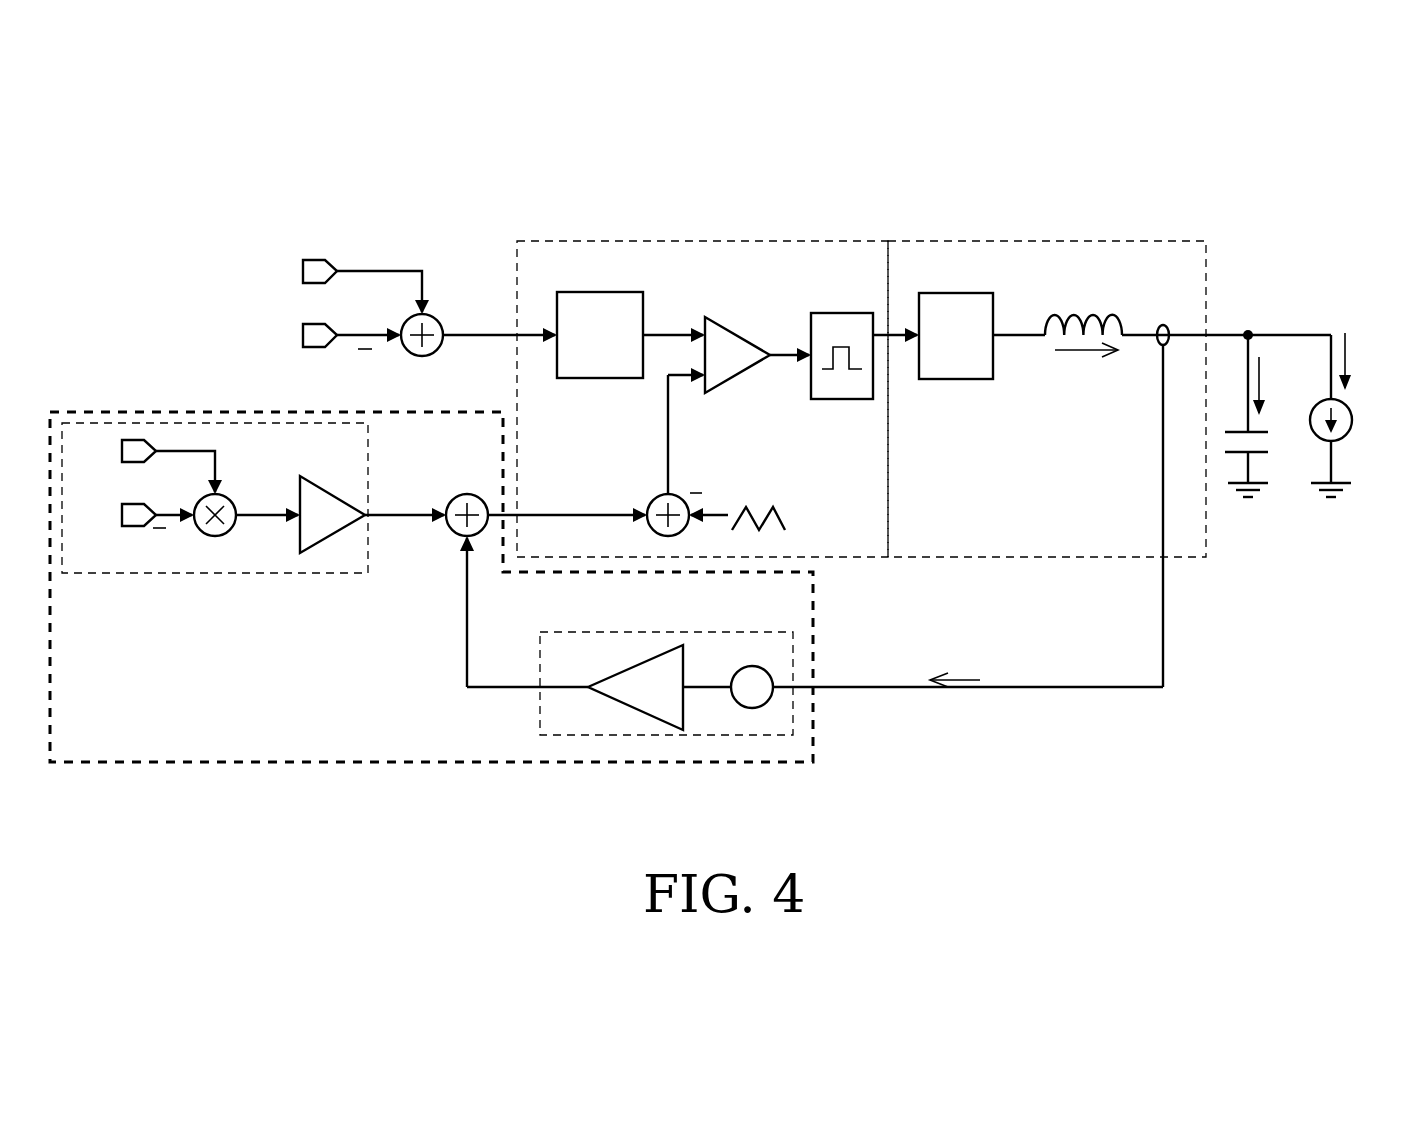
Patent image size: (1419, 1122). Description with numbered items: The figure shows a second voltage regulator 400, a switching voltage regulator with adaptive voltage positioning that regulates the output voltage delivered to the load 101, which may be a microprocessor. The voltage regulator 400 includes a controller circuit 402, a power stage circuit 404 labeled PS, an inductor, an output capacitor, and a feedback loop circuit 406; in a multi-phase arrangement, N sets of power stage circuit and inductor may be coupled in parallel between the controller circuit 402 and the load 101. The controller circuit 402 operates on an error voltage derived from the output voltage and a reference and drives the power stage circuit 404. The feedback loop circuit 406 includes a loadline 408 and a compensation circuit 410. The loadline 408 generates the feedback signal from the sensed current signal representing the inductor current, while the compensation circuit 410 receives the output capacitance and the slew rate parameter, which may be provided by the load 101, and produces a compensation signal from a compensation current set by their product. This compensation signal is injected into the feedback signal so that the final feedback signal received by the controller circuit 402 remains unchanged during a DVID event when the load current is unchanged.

The voltage regulator 400 is at (1207, 152).
The controller circuit 402 is at (783, 241).
The power stage circuit 404 is at (943, 293).
The feedback loop circuit 406 is at (798, 762).
The loadline 408 is at (743, 735).
The compensation circuit 410 is at (293, 573).
The load 101 is at (1352, 420).